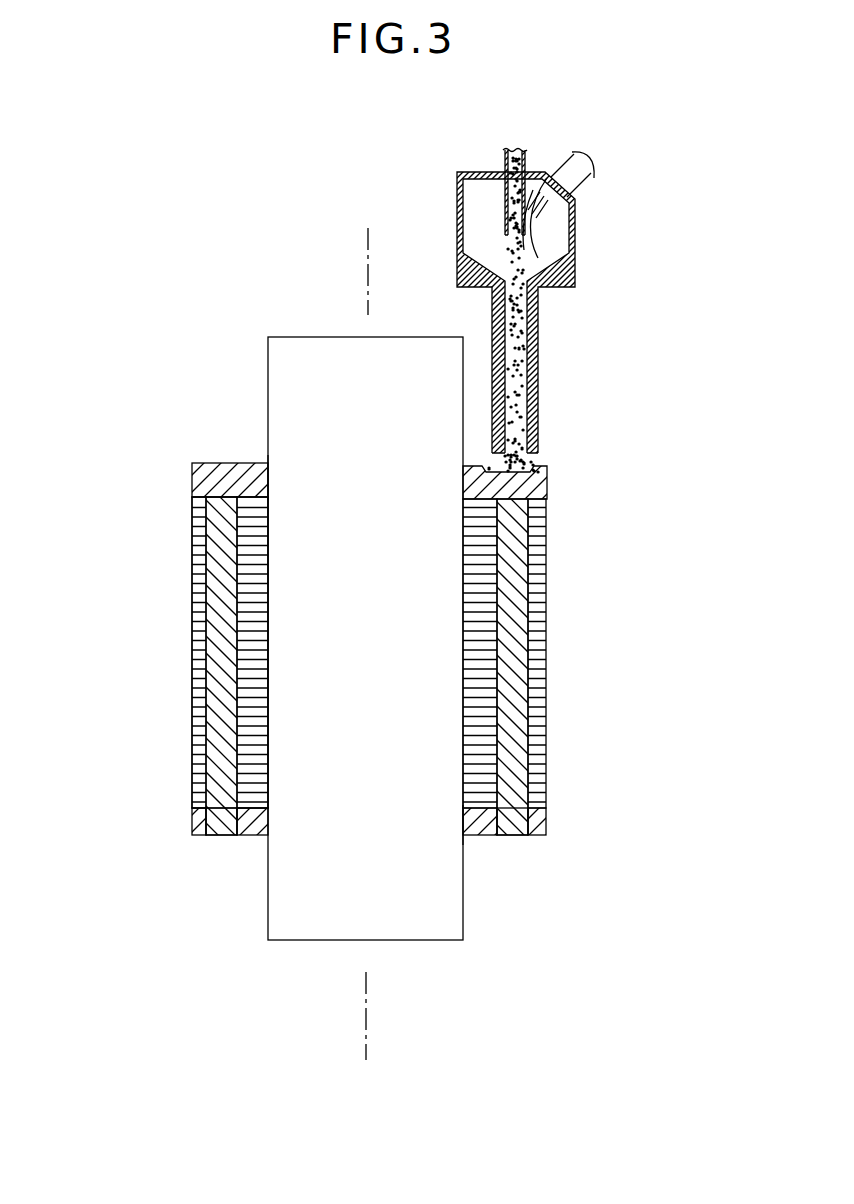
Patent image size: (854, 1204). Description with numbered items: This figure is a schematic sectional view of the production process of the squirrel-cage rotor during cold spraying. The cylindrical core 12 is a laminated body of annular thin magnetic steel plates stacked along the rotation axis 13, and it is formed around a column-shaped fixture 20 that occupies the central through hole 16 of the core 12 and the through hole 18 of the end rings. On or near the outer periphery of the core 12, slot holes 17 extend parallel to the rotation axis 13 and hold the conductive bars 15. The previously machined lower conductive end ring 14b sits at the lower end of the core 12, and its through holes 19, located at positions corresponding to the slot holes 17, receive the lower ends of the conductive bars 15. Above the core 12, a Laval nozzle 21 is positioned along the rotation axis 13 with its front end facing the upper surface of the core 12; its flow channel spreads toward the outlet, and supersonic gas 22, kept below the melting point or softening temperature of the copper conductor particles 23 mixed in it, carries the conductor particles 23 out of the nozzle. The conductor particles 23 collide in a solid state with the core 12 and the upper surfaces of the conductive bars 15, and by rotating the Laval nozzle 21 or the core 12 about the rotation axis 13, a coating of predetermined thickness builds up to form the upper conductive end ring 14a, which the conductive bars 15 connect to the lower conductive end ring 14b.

The cylindrical core 12 is at (192, 505).
The rotation axis 13 is at (368, 232).
The upper conductive end ring 14a is at (192, 475).
The lower conductive end ring 14b is at (190, 822).
The conductive bars 15 is at (212, 548).
The through hole 16 is at (463, 630).
The slot holes 17 is at (212, 644).
The through hole 18 is at (270, 472).
The through holes 19 is at (210, 834).
The fixture 20 is at (287, 336).
The Laval nozzle 21 is at (600, 242).
The supersonic gas 22 is at (538, 258).
The conductor particles 23 is at (530, 460).